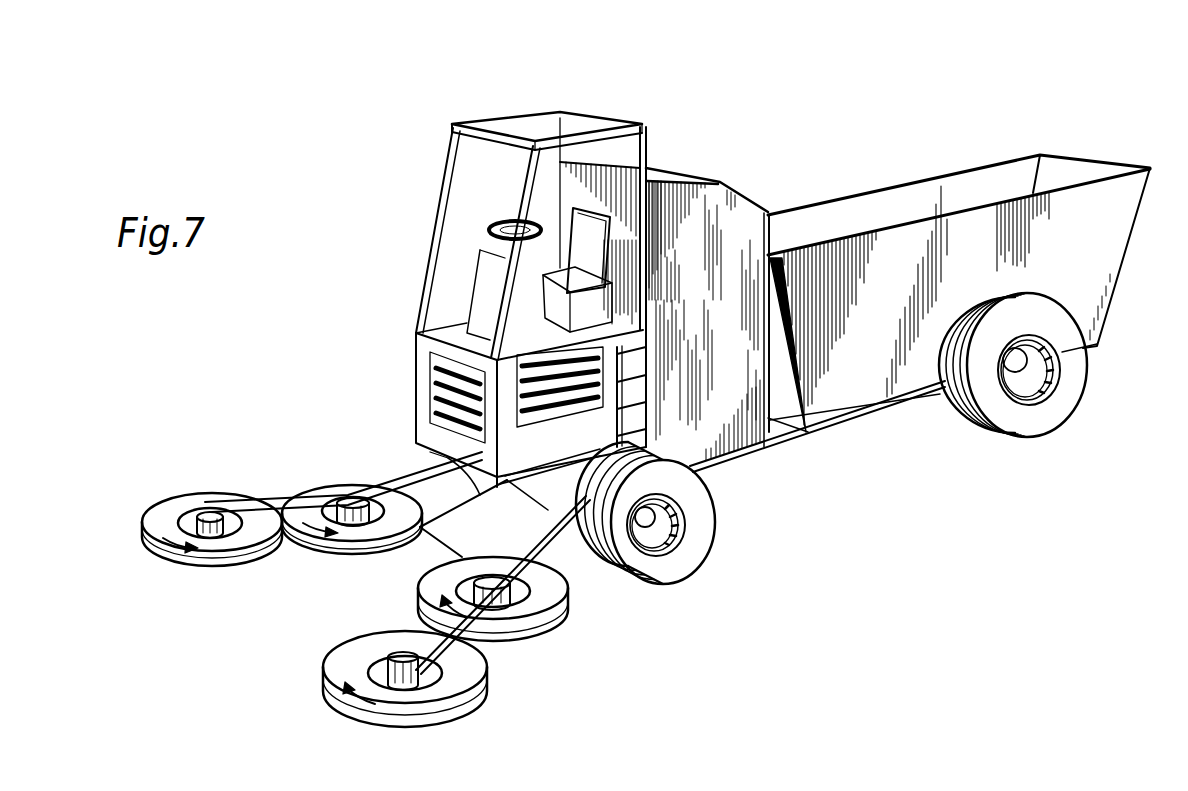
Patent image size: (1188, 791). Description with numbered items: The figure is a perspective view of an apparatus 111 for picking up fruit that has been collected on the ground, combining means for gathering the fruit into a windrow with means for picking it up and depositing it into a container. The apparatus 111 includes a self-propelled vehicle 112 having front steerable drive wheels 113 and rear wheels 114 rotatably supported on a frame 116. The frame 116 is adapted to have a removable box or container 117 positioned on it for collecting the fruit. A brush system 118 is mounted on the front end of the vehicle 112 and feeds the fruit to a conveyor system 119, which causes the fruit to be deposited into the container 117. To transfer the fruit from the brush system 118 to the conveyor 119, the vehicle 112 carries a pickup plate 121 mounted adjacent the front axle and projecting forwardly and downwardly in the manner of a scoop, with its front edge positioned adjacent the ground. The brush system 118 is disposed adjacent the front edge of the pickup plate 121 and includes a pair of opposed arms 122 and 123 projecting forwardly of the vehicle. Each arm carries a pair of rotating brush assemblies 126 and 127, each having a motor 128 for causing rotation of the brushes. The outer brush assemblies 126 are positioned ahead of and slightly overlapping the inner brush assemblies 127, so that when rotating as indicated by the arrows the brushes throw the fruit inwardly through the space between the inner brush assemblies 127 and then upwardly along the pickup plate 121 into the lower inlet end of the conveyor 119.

The apparatus 111 is at (827, 108).
The self-propelled vehicle 112 is at (802, 456).
The front steerable drive wheels 113 is at (688, 552).
The rear wheels 114 is at (1055, 410).
The frame 116 is at (873, 418).
The removable box or container 117 is at (1105, 254).
The brush system 118 is at (512, 695).
The conveyor system 119 is at (734, 236).
The pickup plate 121 is at (447, 543).
The arm 122 is at (560, 530).
The arm 123 is at (406, 463).
The outer brush assembly 126 is at (234, 549).
The inner brush assembly 127 is at (427, 591).
The motor 128 is at (346, 498).